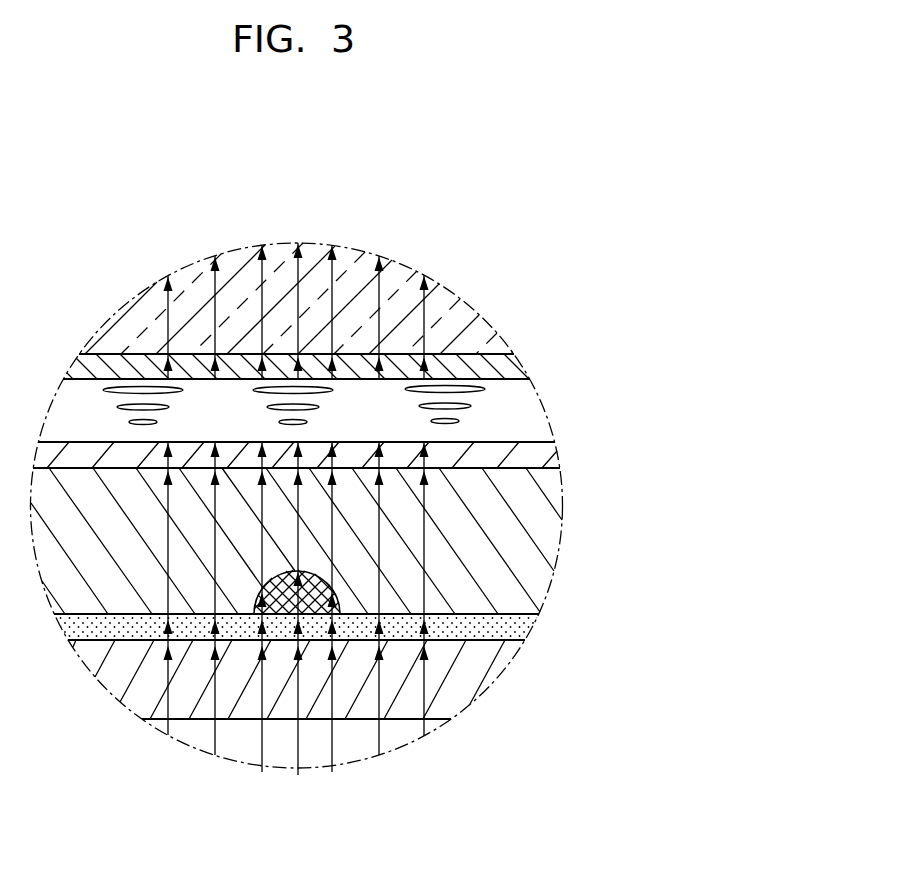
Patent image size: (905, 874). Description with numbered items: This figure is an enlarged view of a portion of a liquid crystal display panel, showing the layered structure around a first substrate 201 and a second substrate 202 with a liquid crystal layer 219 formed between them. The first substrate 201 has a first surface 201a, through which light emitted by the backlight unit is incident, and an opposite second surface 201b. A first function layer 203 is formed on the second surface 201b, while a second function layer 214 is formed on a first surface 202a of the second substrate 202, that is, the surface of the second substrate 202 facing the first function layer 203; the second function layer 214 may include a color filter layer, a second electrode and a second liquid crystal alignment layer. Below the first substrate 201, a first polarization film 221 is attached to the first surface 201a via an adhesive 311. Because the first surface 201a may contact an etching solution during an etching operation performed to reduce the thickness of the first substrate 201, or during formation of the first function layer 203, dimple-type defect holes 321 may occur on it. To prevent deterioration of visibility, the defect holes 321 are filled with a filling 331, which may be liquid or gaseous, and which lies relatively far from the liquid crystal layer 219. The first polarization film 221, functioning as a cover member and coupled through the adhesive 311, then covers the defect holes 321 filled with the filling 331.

The second substrate 202 is at (455, 322).
The first surface of the second substrate 202a is at (484, 354).
The second function layer 214 is at (502, 363).
The liquid crystal layer 219 is at (527, 407).
The first function layer 203 is at (538, 450).
The second surface of the first substrate 201b is at (545, 470).
The first substrate 201 is at (538, 535).
The first surface of the first substrate 201a is at (522, 613).
The adhesive 311 is at (522, 623).
The first polarization film 221 is at (468, 678).
The filling 331 is at (277, 607).
The defect holes 321 is at (320, 573).